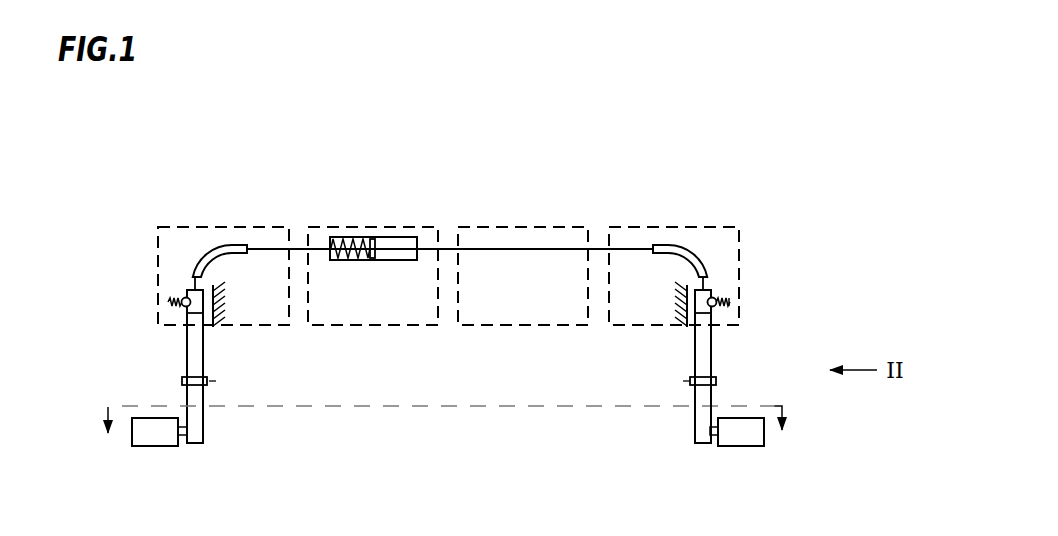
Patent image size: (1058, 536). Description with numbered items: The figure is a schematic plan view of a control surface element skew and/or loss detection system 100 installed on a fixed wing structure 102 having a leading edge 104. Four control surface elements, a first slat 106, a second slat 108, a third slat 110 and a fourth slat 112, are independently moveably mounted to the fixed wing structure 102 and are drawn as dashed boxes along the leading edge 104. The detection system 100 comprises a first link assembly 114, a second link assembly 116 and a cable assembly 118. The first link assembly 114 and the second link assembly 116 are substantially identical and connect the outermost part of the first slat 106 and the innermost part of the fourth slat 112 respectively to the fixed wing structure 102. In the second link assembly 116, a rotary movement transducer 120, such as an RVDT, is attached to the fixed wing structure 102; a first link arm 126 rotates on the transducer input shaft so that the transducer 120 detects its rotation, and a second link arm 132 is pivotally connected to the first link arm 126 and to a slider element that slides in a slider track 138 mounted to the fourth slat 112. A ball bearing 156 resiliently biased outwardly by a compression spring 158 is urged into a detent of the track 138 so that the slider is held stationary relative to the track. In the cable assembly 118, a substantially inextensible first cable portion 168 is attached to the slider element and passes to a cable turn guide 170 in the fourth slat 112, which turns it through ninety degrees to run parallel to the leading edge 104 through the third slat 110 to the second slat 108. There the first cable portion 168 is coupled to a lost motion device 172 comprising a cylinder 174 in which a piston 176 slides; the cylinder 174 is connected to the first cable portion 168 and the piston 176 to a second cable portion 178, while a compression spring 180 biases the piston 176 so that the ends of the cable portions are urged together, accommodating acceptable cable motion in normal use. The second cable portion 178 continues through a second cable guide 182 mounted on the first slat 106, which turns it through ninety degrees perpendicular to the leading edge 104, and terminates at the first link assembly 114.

The control surface element skew and/or loss detection system 100 is at (525, 143).
The fixed wing structure 102 is at (478, 455).
The leading edge 104 is at (492, 405).
The first slat 106 is at (153, 271).
The second slat 108 is at (375, 227).
The third slat 110 is at (515, 227).
The fourth slat 112 is at (741, 252).
The first link assembly 114 is at (145, 367).
The second link assembly 116 is at (787, 375).
The cable assembly 118 is at (561, 243).
The rotary movement transducer 120 is at (757, 435).
The first link arm 126 is at (693, 445).
The second link arm 132 is at (700, 352).
The slider track 138 is at (707, 305).
The ball bearing 156 is at (711, 306).
The compression spring 158 is at (729, 300).
The first cable portion 168 is at (604, 247).
The cable turn guide 170 is at (675, 246).
The lost motion device 172 is at (373, 276).
The cylinder 174 is at (418, 237).
The piston 176 is at (377, 250).
The second cable portion 178 is at (300, 248).
The compression spring 180 is at (347, 237).
The second cable guide 182 is at (203, 253).